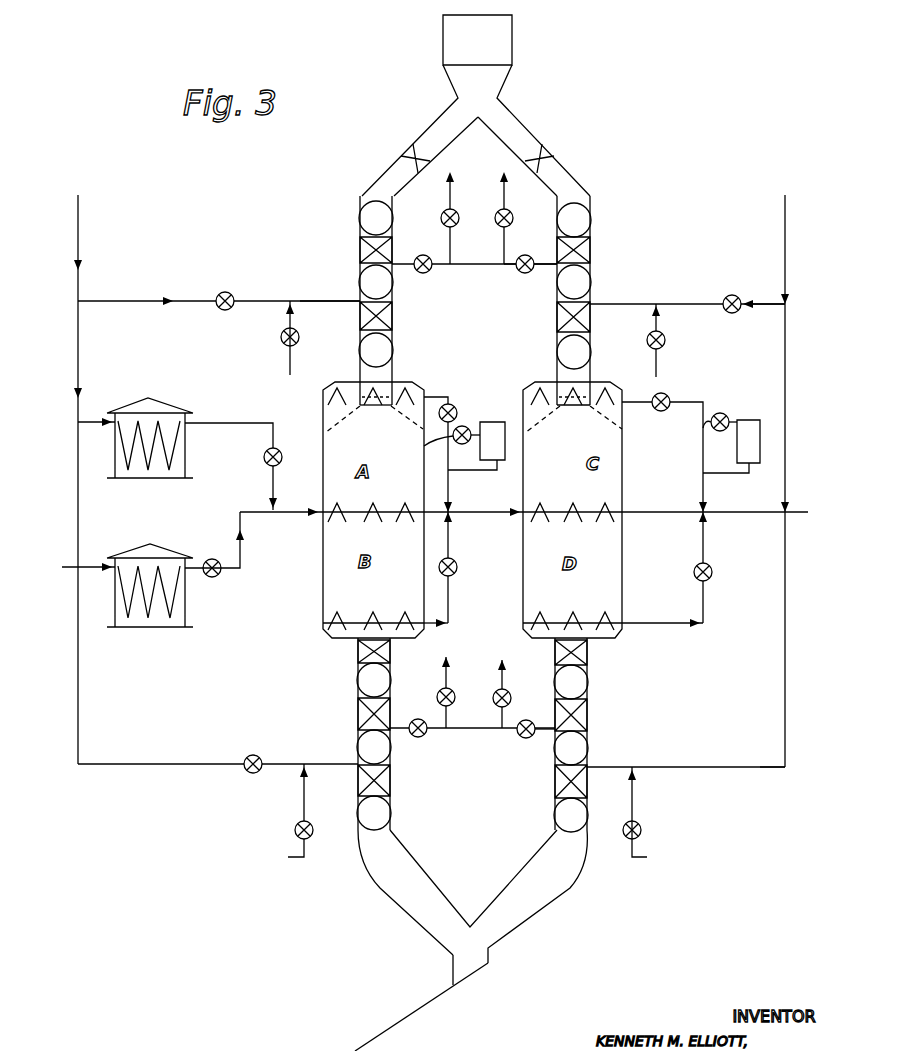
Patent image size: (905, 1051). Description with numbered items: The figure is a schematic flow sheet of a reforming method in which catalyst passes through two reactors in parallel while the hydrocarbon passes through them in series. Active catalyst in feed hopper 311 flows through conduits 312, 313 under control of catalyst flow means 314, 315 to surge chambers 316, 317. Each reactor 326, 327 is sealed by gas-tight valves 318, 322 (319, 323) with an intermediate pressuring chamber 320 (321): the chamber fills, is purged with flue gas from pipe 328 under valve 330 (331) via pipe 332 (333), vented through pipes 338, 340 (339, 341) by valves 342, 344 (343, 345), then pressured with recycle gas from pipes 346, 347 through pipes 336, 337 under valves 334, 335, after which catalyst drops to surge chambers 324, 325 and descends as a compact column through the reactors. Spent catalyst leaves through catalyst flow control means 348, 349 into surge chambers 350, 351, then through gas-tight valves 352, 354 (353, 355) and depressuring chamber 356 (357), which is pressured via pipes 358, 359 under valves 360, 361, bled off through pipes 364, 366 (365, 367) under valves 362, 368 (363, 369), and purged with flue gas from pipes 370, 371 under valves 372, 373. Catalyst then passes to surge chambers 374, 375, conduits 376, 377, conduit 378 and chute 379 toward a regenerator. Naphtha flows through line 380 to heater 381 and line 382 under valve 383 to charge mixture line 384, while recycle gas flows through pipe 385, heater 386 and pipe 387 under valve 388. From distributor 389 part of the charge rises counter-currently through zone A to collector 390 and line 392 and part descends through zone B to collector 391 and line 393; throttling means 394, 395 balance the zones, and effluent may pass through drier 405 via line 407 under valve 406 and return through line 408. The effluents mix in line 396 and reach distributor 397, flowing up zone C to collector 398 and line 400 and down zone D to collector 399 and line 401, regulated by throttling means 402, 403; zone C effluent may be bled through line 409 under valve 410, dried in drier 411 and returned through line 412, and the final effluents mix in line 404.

The feed hopper 311 is at (512, 40).
The conduit 312 is at (432, 126).
The conduit 313 is at (535, 118).
The catalyst flow means 314 is at (406, 152).
The catalyst flow means 315 is at (548, 155).
The surge chamber 316 is at (359, 220).
The surge chamber 317 is at (590, 222).
The gas-tight valve 318 is at (360, 250).
The gas-tight valve 319 is at (590, 250).
The intermediate pressuring chamber 320 is at (359, 280).
The intermediate pressuring chamber 321 is at (590, 284).
The gas-tight valve 322 is at (392, 316).
The gas-tight valve 323 is at (557, 323).
The surge chamber 324 is at (392, 352).
The surge chamber 325 is at (590, 354).
The reactor 326 is at (323, 412).
The reactor 327 is at (622, 508).
The pipe 328 is at (290, 364).
The valve 330 is at (280, 337).
The valve 331 is at (665, 340).
The pipe 332 is at (315, 293).
The pipe 333 is at (678, 300).
The valve 334 is at (230, 294).
The valve 335 is at (736, 297).
The pipe 336 is at (155, 301).
The pipe 337 is at (760, 308).
The pipe 338 is at (474, 275).
The pipe 339 is at (545, 268).
The pipe 340 is at (446, 226).
The pipe 341 is at (504, 244).
The valve 342 is at (419, 272).
The valve 343 is at (521, 272).
The valve 344 is at (478, 196).
The valve 345 is at (512, 214).
The pipe 346 is at (78, 245).
The pipe 347 is at (785, 275).
The catalyst flow control means 348 is at (358, 652).
The catalyst flow control means 349 is at (587, 652).
The surge chamber 350 is at (358, 680).
The surge chamber 351 is at (587, 682).
The gas-tight valve 352 is at (358, 714).
The gas-tight valve 353 is at (587, 716).
The gas-tight valve 354 is at (390, 780).
The gas-tight valve 355 is at (555, 778).
The intermediate depressuring chamber 356 is at (358, 747).
The intermediate depressuring chamber 357 is at (587, 748).
The pipe 358 is at (176, 756).
The pipe 359 is at (770, 770).
The valve 360 is at (256, 756).
The valve 361 is at (690, 770).
The valve 362 is at (414, 720).
The valve 363 is at (530, 720).
The pipe 364 is at (432, 733).
The pipe 365 is at (542, 732).
The pipe 366 is at (450, 660).
The pipe 367 is at (490, 728).
The valve 368 is at (452, 690).
The valve 369 is at (508, 690).
The pipe 370 is at (278, 815).
The pipe 371 is at (659, 816).
The valve 372 is at (295, 830).
The valve 373 is at (641, 830).
The surge chamber 374 is at (358, 814).
The surge chamber 375 is at (555, 815).
The conduit 376 is at (430, 915).
The conduit 377 is at (540, 910).
The conduit 378 is at (452, 975).
The chute 379 is at (335, 1050).
The line 380 is at (90, 564).
The furnace or heater 381 is at (150, 618).
The line 382 is at (216, 560).
The valve 383 is at (224, 570).
The charge mixture line 384 is at (290, 506).
The pipe 385 is at (96, 418).
The heater 386 is at (178, 468).
The pipe 387 is at (230, 423).
The valve 388 is at (264, 455).
The distributor 389 is at (380, 505).
The collector 390 is at (380, 410).
The collector 391 is at (378, 612).
The effluent line 392 is at (438, 383).
The effluent line 393 is at (448, 598).
The throttling means 394 is at (455, 405).
The throttling means 395 is at (455, 560).
The line 396 is at (465, 505).
The distributor 397 is at (546, 507).
The collector 398 is at (580, 410).
The collector 399 is at (590, 606).
The line 400 is at (686, 402).
The line 401 is at (703, 627).
The throttling means 402 is at (666, 394).
The throttling means 403 is at (712, 574).
The line 404 is at (740, 512).
The drier 405 is at (500, 422).
The valve 406 is at (466, 426).
The line 407 is at (434, 443).
The line 408 is at (478, 479).
The line 409 is at (726, 415).
The valve 410 is at (704, 426).
The drier 411 is at (750, 440).
The line 412 is at (712, 472).